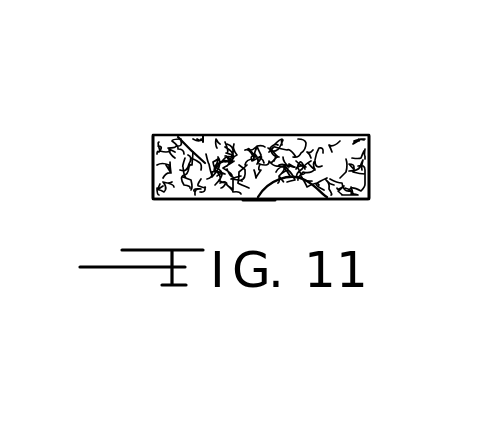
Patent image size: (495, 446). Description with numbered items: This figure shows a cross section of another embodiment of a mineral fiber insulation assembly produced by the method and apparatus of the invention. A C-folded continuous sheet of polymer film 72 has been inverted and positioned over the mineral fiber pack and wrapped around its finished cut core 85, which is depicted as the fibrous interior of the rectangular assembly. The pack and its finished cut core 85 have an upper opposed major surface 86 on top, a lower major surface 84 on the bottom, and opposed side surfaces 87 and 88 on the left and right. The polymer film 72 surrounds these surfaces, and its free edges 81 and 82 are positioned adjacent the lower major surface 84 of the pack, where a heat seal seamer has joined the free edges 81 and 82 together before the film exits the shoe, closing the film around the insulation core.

The polymer film 72 is at (253, 135).
The free edge 81 is at (327, 197).
The free edge 82 is at (255, 202).
The lower major surface 84 is at (187, 199).
The finished cut core 85 is at (178, 137).
The upper opposed major surface 86 is at (203, 136).
The opposed side surface 87 is at (153, 170).
The opposed side surface 88 is at (369, 152).